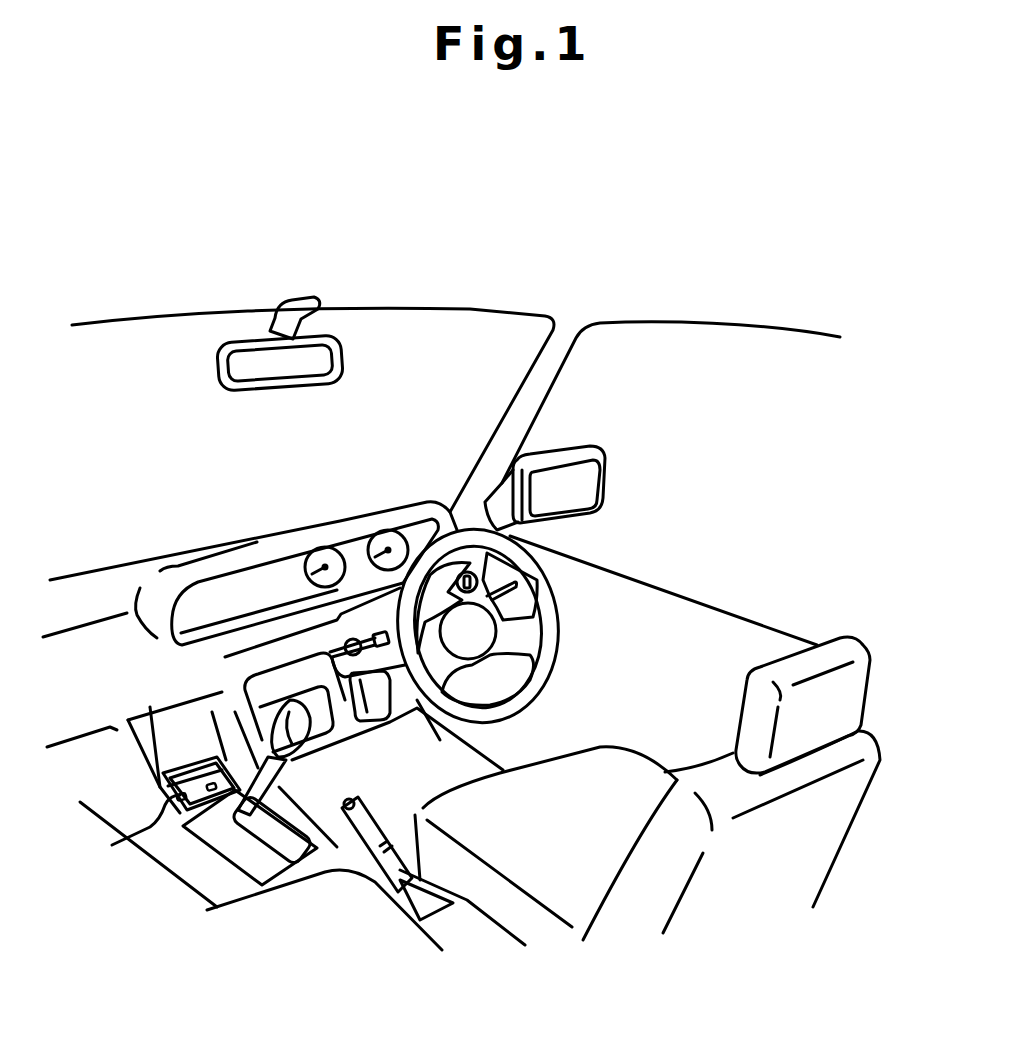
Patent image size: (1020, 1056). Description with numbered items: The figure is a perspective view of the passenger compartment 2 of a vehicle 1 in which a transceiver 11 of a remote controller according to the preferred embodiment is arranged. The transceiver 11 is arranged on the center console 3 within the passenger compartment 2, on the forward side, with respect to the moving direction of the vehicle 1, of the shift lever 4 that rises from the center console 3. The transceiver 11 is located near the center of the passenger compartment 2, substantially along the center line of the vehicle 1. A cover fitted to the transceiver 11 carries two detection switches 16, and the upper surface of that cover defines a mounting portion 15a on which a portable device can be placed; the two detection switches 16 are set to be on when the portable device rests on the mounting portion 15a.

The vehicle 1 is at (749, 292).
The passenger compartment 2 is at (634, 680).
The center console 3 is at (180, 860).
The shift lever 4 is at (305, 742).
The transceiver 11 is at (190, 783).
The mounting portion 15a is at (197, 783).
The detection switches 16 is at (205, 768).